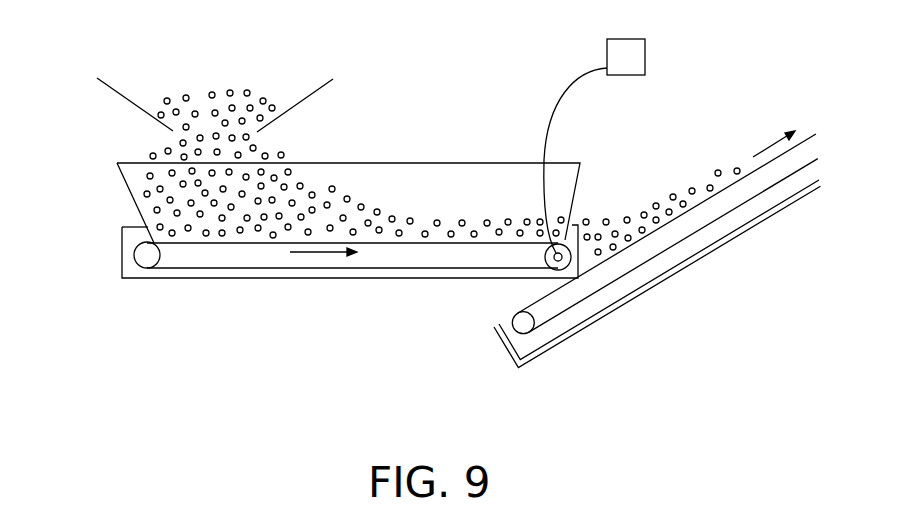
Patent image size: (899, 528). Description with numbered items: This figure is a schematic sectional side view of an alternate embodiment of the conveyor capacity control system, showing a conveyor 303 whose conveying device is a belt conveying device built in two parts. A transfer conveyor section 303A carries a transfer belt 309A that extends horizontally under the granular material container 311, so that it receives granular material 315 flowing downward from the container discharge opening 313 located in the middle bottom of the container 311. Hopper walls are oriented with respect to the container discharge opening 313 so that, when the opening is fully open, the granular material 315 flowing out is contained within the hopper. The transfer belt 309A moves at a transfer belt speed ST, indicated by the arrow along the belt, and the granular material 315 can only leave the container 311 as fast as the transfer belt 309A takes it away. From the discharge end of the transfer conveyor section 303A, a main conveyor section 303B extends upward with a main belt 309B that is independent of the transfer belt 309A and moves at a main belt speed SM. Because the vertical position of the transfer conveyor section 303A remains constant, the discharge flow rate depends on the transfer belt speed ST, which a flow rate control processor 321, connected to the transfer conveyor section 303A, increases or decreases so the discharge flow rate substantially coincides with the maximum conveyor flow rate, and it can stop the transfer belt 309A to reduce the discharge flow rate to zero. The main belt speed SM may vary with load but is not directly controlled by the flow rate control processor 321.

The conveyor 303 is at (490, 362).
The transfer conveyor section 303A is at (187, 278).
The main conveyor section 303B is at (655, 285).
The transfer belt 309A is at (410, 243).
The main belt 309B is at (703, 198).
The container 311 is at (110, 88).
The container discharge opening 313 is at (207, 130).
The granular material 315 is at (237, 92).
The flow rate control processor 321 is at (645, 52).
The transfer belt speed ST is at (313, 253).
The main belt speed SM is at (766, 148).